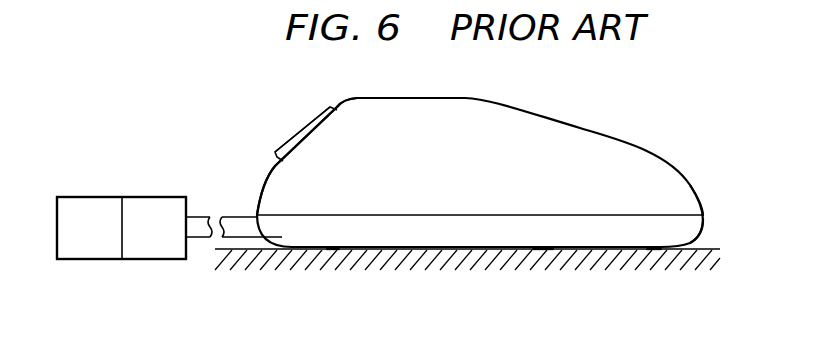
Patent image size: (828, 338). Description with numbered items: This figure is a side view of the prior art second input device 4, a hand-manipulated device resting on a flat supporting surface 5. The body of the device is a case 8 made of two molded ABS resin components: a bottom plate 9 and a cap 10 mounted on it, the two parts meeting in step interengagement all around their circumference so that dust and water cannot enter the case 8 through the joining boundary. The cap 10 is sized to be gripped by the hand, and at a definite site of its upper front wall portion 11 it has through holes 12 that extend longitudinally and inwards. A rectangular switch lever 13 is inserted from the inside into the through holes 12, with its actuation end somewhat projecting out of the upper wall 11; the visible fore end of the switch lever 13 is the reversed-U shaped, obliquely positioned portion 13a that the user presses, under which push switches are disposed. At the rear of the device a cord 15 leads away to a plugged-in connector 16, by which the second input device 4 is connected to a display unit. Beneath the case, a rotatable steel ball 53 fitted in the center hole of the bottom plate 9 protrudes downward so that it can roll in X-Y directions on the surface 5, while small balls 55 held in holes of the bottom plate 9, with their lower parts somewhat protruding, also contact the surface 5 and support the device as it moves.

The second input device 4 is at (290, 102).
The ground 5 is at (246, 251).
The case 8 is at (741, 188).
The bottom plate 9 is at (690, 232).
The cap 10 is at (685, 207).
The upper front wall portion 11 is at (337, 105).
The through holes 12 is at (279, 160).
The switch lever 13 is at (293, 129).
The oblique-positioned portion to be actuated 13a is at (286, 143).
The cord 15 is at (237, 218).
The plugged-in connector 16 is at (130, 196).
The steel ball 53 is at (543, 252).
The small balls 55 is at (333, 251).